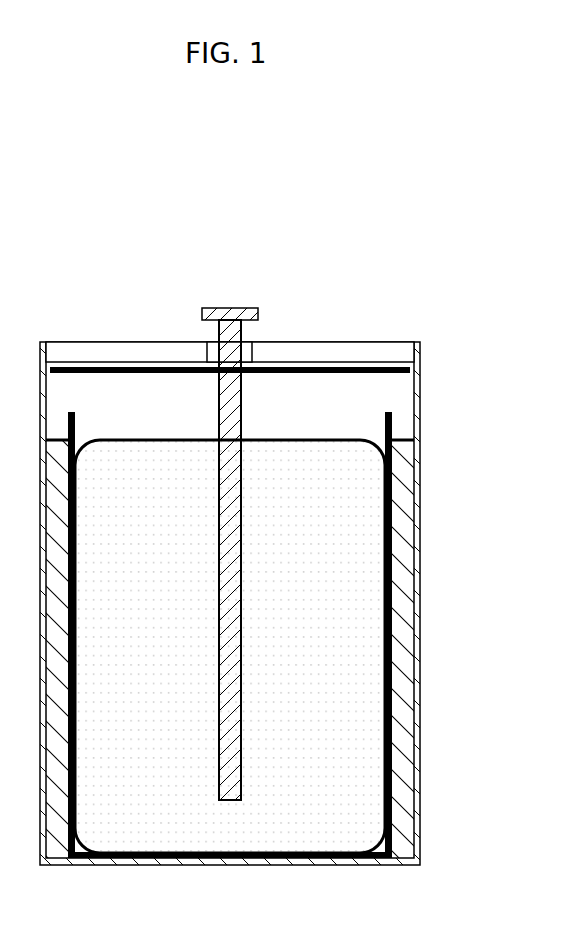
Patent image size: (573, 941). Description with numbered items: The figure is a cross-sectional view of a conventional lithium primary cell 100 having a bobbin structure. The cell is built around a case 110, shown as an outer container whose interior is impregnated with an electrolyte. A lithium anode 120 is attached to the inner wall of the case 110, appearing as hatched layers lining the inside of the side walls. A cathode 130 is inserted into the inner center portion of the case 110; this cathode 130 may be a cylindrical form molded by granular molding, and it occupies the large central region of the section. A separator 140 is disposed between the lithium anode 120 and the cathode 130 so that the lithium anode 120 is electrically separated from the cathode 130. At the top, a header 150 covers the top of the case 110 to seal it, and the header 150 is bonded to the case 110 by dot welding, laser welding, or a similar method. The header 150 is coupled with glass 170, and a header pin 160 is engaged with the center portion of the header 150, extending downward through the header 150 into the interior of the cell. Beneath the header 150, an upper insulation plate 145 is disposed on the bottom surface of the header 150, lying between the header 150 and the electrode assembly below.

The lithium primary cell 100 is at (79, 204).
The case 110 is at (420, 483).
The lithium anode 120 is at (403, 687).
The cathode 130 is at (363, 592).
The separator 140 is at (392, 420).
The upper insulation plate 145 is at (373, 373).
The header 150 is at (363, 348).
The header pin 160 is at (223, 311).
The glass 170 is at (248, 355).